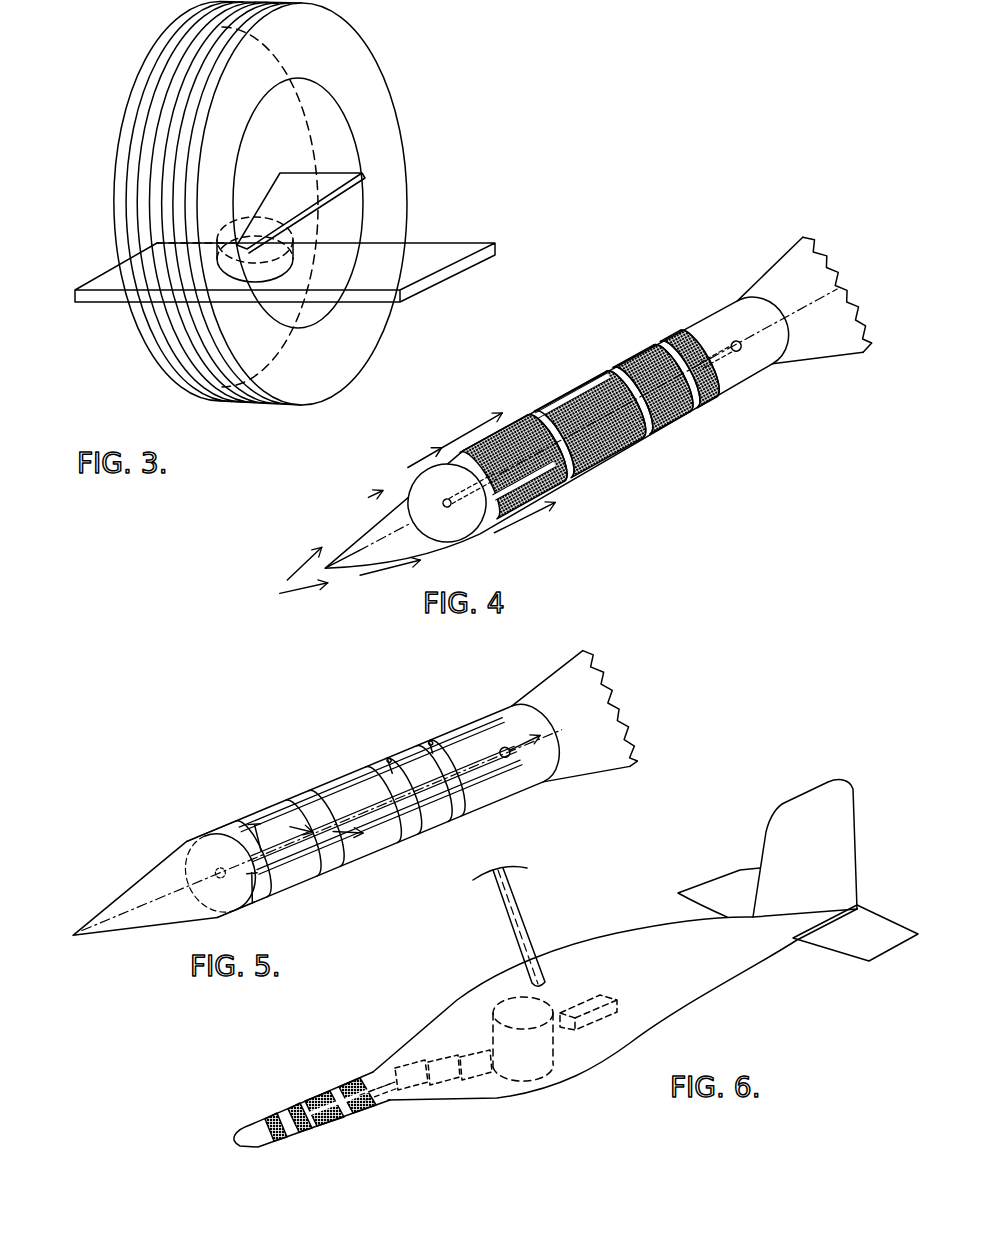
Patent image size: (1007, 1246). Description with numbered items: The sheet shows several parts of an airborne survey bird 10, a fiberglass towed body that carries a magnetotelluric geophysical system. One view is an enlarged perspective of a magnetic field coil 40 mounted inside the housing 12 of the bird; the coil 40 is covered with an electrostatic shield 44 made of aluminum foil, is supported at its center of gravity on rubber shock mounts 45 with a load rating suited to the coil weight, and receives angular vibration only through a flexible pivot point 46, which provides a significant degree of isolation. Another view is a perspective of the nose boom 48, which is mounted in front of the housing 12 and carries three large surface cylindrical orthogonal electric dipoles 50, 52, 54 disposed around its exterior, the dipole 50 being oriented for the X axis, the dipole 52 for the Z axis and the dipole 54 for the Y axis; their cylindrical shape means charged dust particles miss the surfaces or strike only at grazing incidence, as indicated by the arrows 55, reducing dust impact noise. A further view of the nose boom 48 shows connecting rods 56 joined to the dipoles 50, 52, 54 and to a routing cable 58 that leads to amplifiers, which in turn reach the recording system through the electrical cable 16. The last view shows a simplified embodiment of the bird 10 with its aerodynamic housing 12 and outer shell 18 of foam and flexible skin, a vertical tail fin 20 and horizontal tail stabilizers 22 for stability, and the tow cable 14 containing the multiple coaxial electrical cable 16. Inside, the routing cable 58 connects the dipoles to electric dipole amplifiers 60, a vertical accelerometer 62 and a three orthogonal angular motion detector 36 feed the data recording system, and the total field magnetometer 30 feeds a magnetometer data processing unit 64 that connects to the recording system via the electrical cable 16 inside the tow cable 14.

In FIG. 6, the airborne survey bird 10 is at (590, 905).
In FIG. 6, the aerodynamic housing 12 is at (713, 988).
In FIG. 6, the tow cable 14 is at (515, 918).
In FIG. 6, the multiple coaxial electrical cable 16 is at (508, 927).
In FIG. 4, the outer shell 18 is at (785, 272).
In FIG. 5, the outer shell 18 is at (565, 682).
In FIG. 6, the vertical tail fin 20 is at (844, 818).
In FIG. 6, the horizontal tail stabilizers 22 is at (728, 887).
In FIG. 6, the total field magnetometer 30 is at (543, 1053).
In FIG. 6, the angular motion detectors 36 is at (468, 1043).
In FIG. 3, the magnetic field coil 40 is at (372, 107).
In FIG. 3, the electrostatic shield 44 is at (343, 53).
In FIG. 3, the rubber shock mounts 45 is at (455, 250).
In FIG. 3, the flexible pivot point 46 is at (257, 197).
In FIG. 4, the nose boom 48 is at (723, 320).
In FIG. 5, the nose boom 48 is at (483, 722).
In FIG. 6, the nose boom 48 is at (260, 1132).
In FIG. 4, the electric dipole 50 is at (507, 420).
In FIG. 5, the electric dipole 50 is at (243, 832).
In FIG. 6, the electric dipole 50 is at (318, 1118).
In FIG. 4, the electric dipole 52 is at (592, 487).
In FIG. 5, the electric dipole 52 is at (353, 792).
In FIG. 6, the electric dipole 52 is at (352, 1095).
In FIG. 4, the electric dipole 54 is at (667, 337).
In FIG. 5, the electric dipole 54 is at (450, 753).
In FIG. 6, the electric dipole 54 is at (290, 1115).
In FIG. 4, the arrows 55 is at (379, 488).
In FIG. 5, the connecting rods 56 is at (263, 823).
In FIG. 5, the routing cable 58 is at (490, 763).
In FIG. 6, the routing cable 58 is at (373, 1093).
In FIG. 6, the electric dipole amplifiers 60 is at (407, 1067).
In FIG. 6, the vertical accelerometer 62 is at (440, 1057).
In FIG. 6, the magnetometer data processing unit 64 is at (603, 1002).